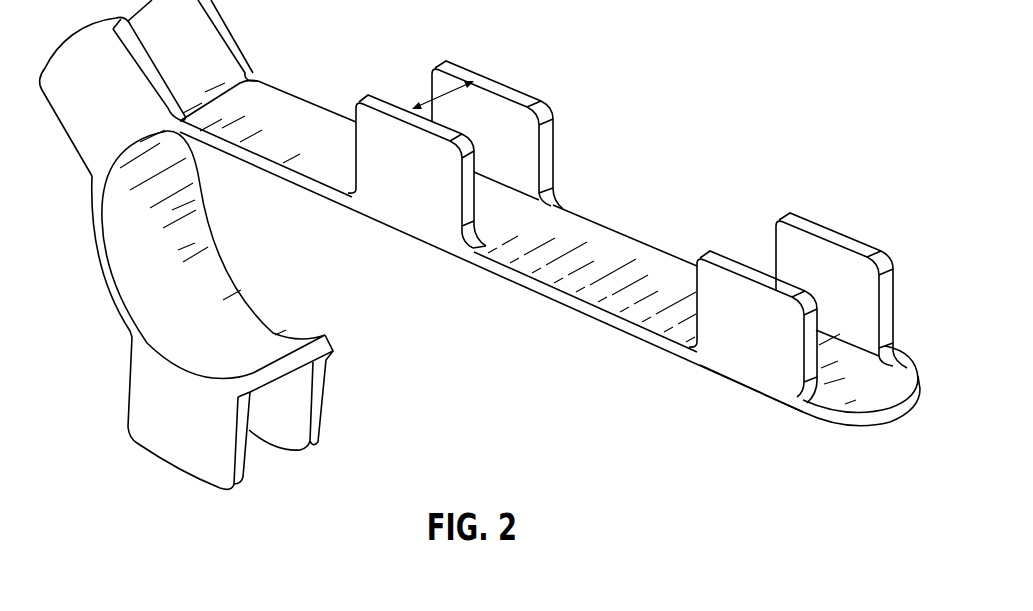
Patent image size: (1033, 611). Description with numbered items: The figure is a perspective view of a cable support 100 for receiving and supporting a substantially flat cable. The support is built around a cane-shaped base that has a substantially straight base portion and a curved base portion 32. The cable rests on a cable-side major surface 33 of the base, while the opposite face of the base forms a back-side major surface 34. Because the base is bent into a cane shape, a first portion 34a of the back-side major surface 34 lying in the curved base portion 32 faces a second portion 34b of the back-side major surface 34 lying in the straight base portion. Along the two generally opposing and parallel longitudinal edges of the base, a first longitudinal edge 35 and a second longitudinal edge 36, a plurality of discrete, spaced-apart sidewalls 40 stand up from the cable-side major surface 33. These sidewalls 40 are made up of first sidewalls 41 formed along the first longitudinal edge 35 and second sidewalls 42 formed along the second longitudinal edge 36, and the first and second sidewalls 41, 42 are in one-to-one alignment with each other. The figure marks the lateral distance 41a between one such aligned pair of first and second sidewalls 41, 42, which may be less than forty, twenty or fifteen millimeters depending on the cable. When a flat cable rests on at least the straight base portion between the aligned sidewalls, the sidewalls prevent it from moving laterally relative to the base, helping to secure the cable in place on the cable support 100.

The cable support 100 is at (496, 244).
The curved base portion 32 is at (188, 247).
The cable-side major surface 33 is at (610, 254).
The back-side major surface 34 is at (637, 340).
The first portion of the back-side major surface 34a is at (260, 340).
The second portion of the back-side major surface 34b is at (303, 194).
The first longitudinal edge 35 is at (547, 292).
The second longitudinal edge 36 is at (663, 253).
The sidewalls 40 is at (845, 241).
The first sidewalls 41 is at (869, 288).
The lateral distance 41a is at (440, 95).
The second sidewalls 42 is at (748, 367).